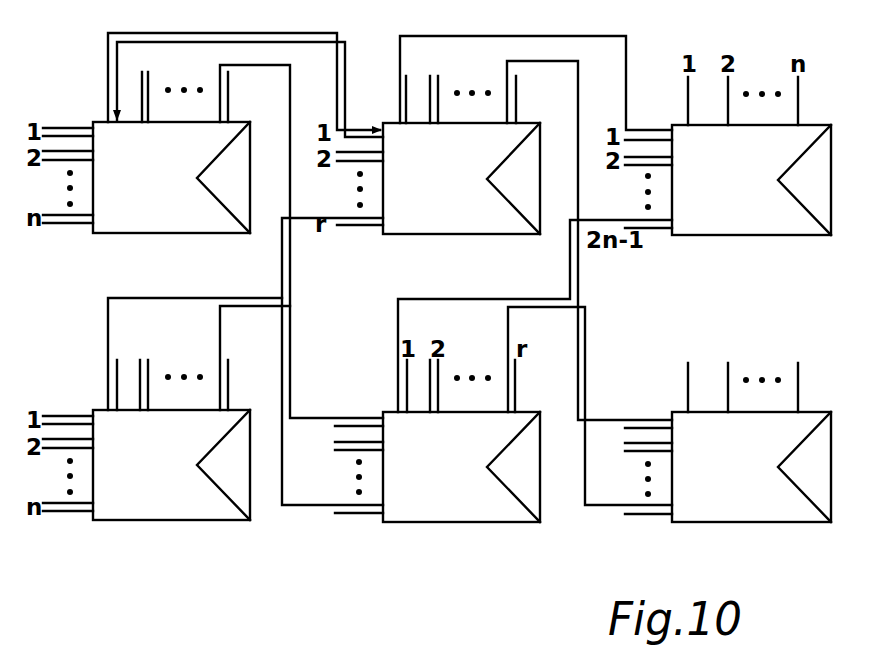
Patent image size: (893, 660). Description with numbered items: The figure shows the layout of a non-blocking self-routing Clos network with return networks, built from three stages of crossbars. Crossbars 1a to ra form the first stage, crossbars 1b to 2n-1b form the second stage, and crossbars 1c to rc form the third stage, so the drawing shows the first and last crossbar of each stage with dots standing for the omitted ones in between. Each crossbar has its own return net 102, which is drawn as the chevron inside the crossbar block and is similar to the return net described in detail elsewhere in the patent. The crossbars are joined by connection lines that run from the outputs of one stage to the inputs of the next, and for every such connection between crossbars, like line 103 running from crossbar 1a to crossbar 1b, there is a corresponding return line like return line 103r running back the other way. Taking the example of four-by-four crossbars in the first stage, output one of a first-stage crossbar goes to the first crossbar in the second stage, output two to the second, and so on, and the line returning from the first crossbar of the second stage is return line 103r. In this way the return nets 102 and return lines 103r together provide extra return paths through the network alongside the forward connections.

The return net 102 is at (242, 203).
The line 103 is at (248, 33).
The return line 103r is at (345, 47).
The crossbar 1a is at (171, 177).
The crossbar 1b is at (461, 178).
The crossbar 1c is at (751, 180).
The crossbar ra is at (171, 465).
The crossbar 2n-1b is at (461, 467).
The crossbar rc is at (751, 467).